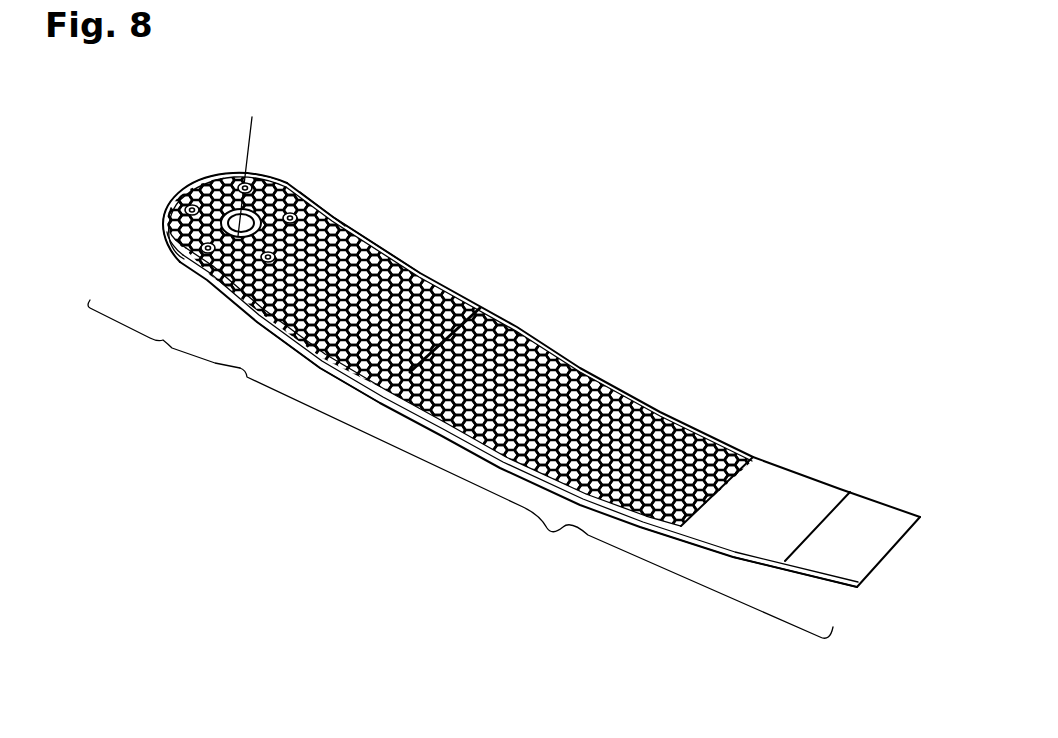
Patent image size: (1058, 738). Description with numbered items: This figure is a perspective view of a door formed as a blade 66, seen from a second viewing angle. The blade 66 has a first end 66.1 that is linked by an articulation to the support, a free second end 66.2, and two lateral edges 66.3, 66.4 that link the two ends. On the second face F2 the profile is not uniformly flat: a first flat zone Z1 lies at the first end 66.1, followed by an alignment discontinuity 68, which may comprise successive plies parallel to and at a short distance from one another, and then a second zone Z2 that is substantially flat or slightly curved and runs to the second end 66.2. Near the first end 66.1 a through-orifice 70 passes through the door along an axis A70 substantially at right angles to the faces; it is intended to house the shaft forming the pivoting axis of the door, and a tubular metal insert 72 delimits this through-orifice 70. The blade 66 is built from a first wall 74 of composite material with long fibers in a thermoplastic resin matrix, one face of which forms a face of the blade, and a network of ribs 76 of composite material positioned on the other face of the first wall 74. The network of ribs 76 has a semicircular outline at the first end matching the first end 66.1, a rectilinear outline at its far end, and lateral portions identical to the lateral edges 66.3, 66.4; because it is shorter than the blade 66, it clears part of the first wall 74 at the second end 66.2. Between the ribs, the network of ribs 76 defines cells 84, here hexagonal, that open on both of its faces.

The blade 66 is at (519, 326).
The first end 66.1 is at (178, 196).
The second end 66.2 is at (893, 547).
The lateral edge 66.3 is at (485, 470).
The lateral edge 66.4 is at (610, 384).
The alignment discontinuity 68 is at (250, 337).
The through-orifice 70 is at (282, 178).
The tubular metal insert 72 is at (178, 268).
The first wall 74 is at (731, 567).
The network of ribs 76 is at (298, 362).
The cells 84 is at (361, 239).
The axis of the through-orifice A70 is at (241, 163).
The second face F2 is at (324, 214).
The first flat zone Z1 is at (164, 340).
The second zone Z2 is at (536, 503).